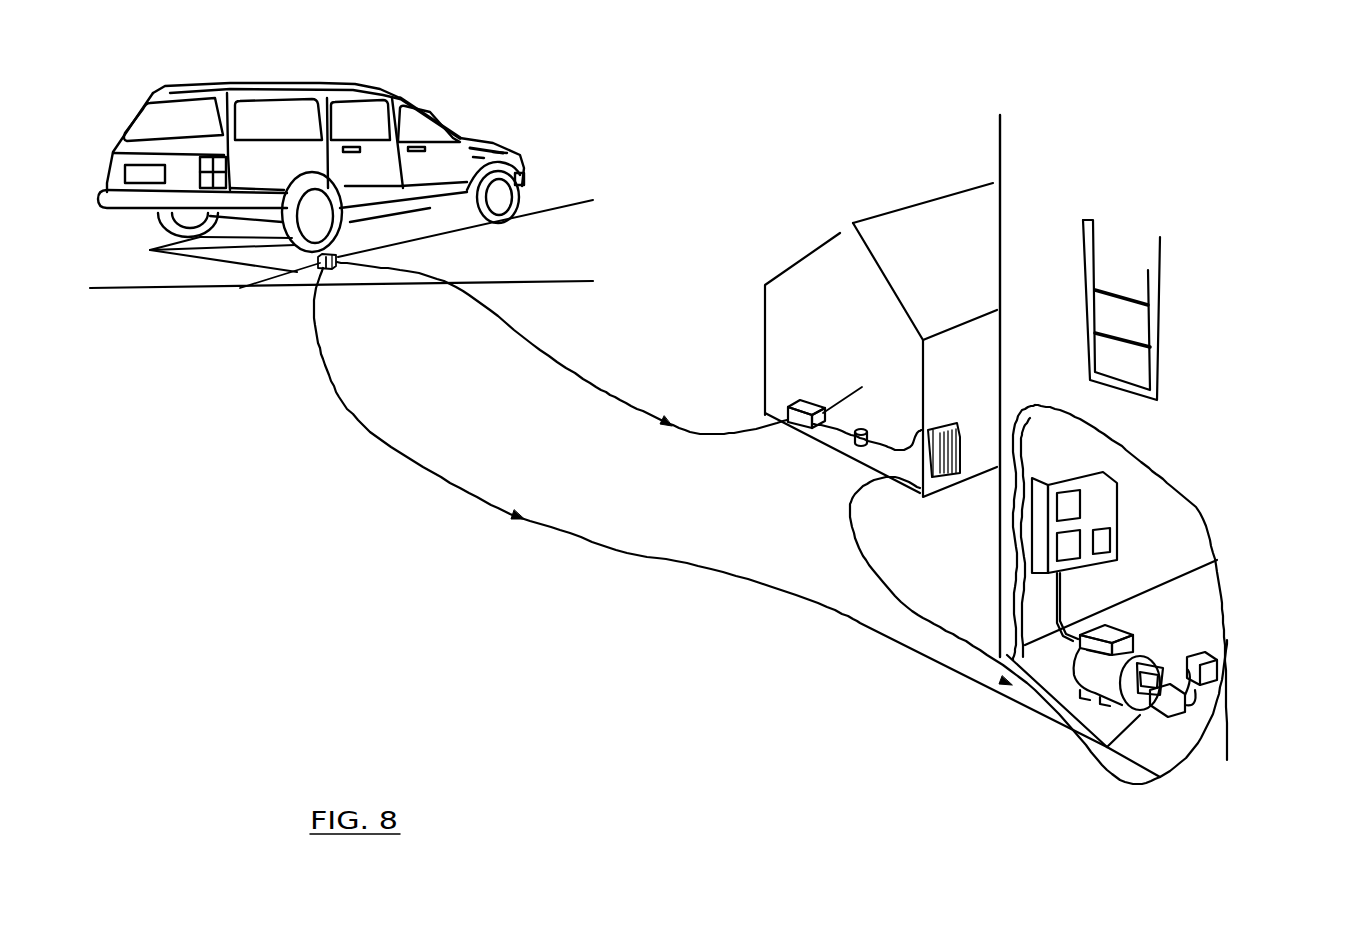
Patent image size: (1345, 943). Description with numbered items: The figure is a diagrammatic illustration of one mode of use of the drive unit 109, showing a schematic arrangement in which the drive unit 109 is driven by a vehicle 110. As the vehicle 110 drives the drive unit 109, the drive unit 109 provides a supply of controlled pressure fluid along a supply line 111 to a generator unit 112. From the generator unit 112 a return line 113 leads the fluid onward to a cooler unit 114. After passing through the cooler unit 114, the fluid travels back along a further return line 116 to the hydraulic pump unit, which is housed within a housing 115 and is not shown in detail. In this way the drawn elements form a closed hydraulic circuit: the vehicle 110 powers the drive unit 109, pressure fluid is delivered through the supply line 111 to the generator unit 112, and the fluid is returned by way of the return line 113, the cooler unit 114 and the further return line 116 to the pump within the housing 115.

The drive unit 109 is at (322, 266).
The vehicle 110 is at (452, 113).
The supply line 111 is at (688, 563).
The generator unit 112 is at (1162, 637).
The return line 113 is at (937, 633).
The cooler unit 114 is at (943, 425).
The housing 115 is at (335, 266).
The further return line 116 is at (630, 406).